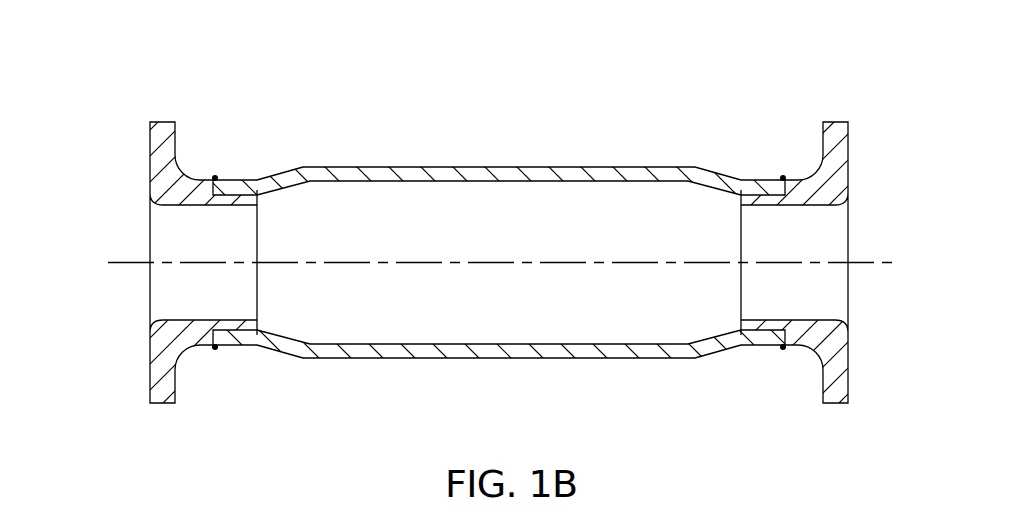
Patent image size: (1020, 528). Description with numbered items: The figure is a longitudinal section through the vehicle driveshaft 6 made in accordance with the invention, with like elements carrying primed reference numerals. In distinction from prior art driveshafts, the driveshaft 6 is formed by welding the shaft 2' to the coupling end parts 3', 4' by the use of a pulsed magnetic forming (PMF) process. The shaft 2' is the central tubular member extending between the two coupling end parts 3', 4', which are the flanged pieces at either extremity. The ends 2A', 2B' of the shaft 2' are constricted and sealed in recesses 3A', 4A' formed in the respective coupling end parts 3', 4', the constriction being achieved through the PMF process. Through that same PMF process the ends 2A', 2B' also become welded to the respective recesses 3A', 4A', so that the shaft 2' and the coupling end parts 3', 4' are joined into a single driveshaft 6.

The driveshaft 6 is at (466, 134).
The shaft 2' is at (499, 297).
The end of shaft 2A' is at (271, 295).
The end of shaft 2B' is at (736, 306).
The coupling end part 3' is at (182, 300).
The recess 3A' is at (155, 262).
The coupling end part 4' is at (861, 280).
The recess 4A' is at (838, 262).